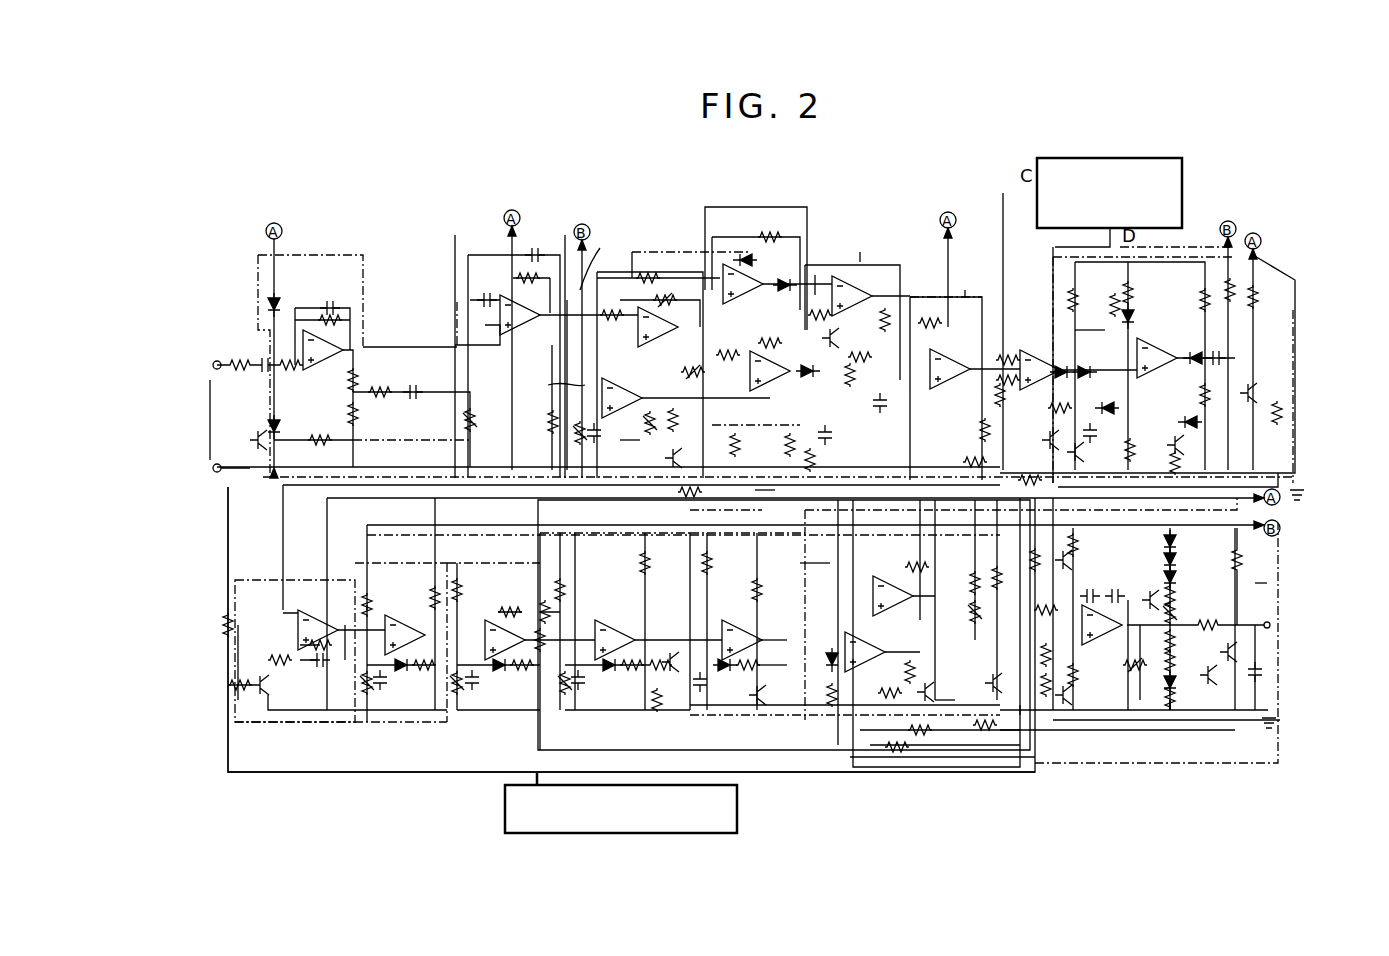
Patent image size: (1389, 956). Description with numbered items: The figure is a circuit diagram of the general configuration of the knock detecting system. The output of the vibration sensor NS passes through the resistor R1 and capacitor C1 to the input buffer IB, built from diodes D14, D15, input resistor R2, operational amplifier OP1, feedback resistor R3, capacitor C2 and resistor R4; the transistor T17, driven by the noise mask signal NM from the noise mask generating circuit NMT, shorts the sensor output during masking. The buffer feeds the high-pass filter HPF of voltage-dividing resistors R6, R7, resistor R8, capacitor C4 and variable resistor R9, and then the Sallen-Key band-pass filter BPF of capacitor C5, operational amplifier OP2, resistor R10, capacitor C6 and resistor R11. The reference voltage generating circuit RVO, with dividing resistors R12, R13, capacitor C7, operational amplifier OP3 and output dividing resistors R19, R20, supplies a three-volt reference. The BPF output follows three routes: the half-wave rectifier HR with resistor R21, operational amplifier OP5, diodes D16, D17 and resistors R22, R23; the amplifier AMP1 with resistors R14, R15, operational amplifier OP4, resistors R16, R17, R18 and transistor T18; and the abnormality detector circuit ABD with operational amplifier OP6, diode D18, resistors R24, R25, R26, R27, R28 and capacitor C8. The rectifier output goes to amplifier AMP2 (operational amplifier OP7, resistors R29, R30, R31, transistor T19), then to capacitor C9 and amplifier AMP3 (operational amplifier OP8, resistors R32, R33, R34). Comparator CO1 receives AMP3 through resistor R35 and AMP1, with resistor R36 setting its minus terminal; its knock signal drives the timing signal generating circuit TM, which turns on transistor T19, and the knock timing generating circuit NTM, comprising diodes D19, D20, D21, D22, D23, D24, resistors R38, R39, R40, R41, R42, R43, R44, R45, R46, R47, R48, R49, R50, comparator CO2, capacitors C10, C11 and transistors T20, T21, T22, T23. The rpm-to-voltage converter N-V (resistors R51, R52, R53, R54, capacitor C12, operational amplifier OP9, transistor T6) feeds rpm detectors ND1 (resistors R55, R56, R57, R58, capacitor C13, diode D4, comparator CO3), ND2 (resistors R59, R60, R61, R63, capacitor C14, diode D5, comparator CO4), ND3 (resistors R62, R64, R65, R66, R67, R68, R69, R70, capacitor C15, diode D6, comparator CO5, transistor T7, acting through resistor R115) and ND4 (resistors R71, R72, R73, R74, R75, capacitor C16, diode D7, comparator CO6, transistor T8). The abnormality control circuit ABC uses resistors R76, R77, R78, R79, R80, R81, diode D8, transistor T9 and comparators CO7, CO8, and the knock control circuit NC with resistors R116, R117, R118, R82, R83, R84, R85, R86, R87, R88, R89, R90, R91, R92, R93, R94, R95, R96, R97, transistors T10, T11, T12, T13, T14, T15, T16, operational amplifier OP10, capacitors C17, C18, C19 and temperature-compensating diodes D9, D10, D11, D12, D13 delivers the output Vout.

The vibration sensor NS is at (222, 420).
The resistor R1 is at (235, 376).
The capacitor C1 is at (248, 353).
The input resistor R2 is at (290, 353).
The diode D15 is at (293, 298).
The diode D14 is at (305, 416).
The transistor T17 is at (280, 449).
The input buffer IB is at (363, 270).
The operational amplifier OP1 is at (324, 363).
The capacitor C2 is at (330, 301).
The feedback resistor R3 is at (336, 330).
The resistor R4 is at (322, 428).
The voltage-dividing resistor R7 is at (365, 376).
The voltage-dividing resistor R6 is at (367, 420).
The high-pass filter HPF is at (411, 381).
The resistor R8 is at (387, 401).
The capacitor C4 is at (415, 381).
The variable resistor R9 is at (453, 423).
The band-pass filter BPF is at (433, 317).
The capacitor C6 is at (547, 246).
The resistor R10 is at (532, 287).
The capacitor C5 is at (484, 309).
The operational amplifier OP2 is at (525, 330).
The amplifier AMP1 is at (615, 258).
The half-wave rectifier HR is at (691, 239).
The resistor R21 is at (671, 267).
The resistor R14 is at (617, 304).
The resistor R15 is at (677, 306).
The operational amplifier OP4 is at (640, 327).
The operational amplifier OP3 is at (627, 384).
The resistor R16 is at (682, 364).
The resistor R18 is at (677, 405).
The voltage-dividing resistor R12 is at (552, 382).
The resistor R11 is at (539, 422).
The voltage-dividing resistor R13 is at (552, 438).
The capacitor C7 is at (560, 448).
The output voltage dividing resistor R20 is at (634, 423).
The reference voltage generating circuit RVO is at (618, 455).
The transistor T18 is at (703, 470).
The output voltage dividing resistor R19 is at (667, 491).
The resistor R115 is at (758, 491).
The resistor R17 is at (739, 447).
The resistor R22 is at (760, 228).
The diode D16 is at (764, 252).
The diode D17 is at (777, 276).
The operational amplifier OP5 is at (742, 294).
The resistor R29 is at (825, 270).
The resistor R23 is at (803, 321).
The amplifier circuit AMP2 is at (870, 250).
The operational amplifier OP7 is at (870, 295).
The resistor R31 is at (911, 303).
The transistor T19 is at (849, 331).
The resistor R30 is at (860, 348).
The operational amplifier OP6 is at (764, 384).
The resistor R24 is at (731, 367).
The resistor R25 is at (782, 351).
The diode D18 is at (812, 381).
The resistor R28 is at (852, 380).
The amplifier AMP3 is at (982, 284).
The resistor R32 is at (932, 312).
The operational amplifier OP8 is at (954, 364).
The capacitor C8 is at (847, 434).
The capacitor C9 is at (888, 417).
The resistor R33 is at (1002, 395).
The resistor R34 is at (964, 430).
The resistor R39 is at (979, 468).
The abnormality detector circuit ABD is at (756, 433).
The resistor R26 is at (780, 448).
The resistor R27 is at (805, 474).
The timing signal generating circuit TM is at (1183, 193).
The knock timing generating circuit NTM is at (1177, 370).
The resistor R35 is at (1020, 337).
The resistor R36 is at (1020, 357).
The resistor R41 is at (1091, 293).
The resistor R43 is at (1101, 308).
The comparator CO1 is at (1096, 333).
The diode D20 is at (1096, 359).
The diode D19 is at (1071, 382).
The resistor R44 is at (1146, 290).
The resistor R45 is at (1184, 298).
The diode D22 is at (1148, 316).
The comparator CO2 is at (1161, 350).
The diode D23 is at (1185, 368).
The capacitor C11 is at (1224, 344).
The resistor R46 is at (1186, 393).
The resistor R40 is at (1046, 409).
The transistor T20 is at (1035, 433).
The transistor T21 is at (1064, 454).
The diode D21 is at (1116, 413).
The capacitor C10 is at (1109, 435).
The resistor R42 is at (1116, 453).
The diode D24 is at (1206, 428).
The transistor T22 is at (1196, 446).
The resistor R47 is at (1196, 463).
The resistor R38 is at (1027, 482).
The transistor T23 is at (1289, 389).
The resistor R50 is at (1305, 413).
The resistor R49 is at (1270, 301).
The resistor R48 is at (1232, 287).
The noise mask signal NM is at (631, 631).
The noise mask generating circuit NMT is at (504, 806).
The rpm-to-voltage converter N-V is at (294, 637).
The operational amplifier OP9 is at (310, 612).
The resistor R51 is at (206, 625).
The resistor R54 is at (285, 632).
The capacitor C12 is at (306, 667).
The resistor R53 is at (236, 664).
The resistor R52 is at (216, 699).
The transistor T6 is at (273, 685).
The rpm detector ND1 is at (401, 550).
The comparator CO3 is at (417, 634).
The resistor R55 is at (387, 599).
The resistor R58 is at (418, 588).
The resistor R56 is at (349, 710).
The capacitor C13 is at (391, 710).
The diode D4 is at (401, 677).
The resistor R57 is at (413, 686).
The rpm detector ND2 is at (493, 550).
The resistor R59 is at (474, 587).
The resistor R62 is at (516, 598).
The comparator CO4 is at (520, 640).
The resistor R65 is at (528, 646).
The diode D5 is at (501, 677).
The resistor R61 is at (519, 686).
The resistor R60 is at (460, 710).
The capacitor C14 is at (493, 710).
The rpm detector ND3 is at (615, 519).
The resistor R68 is at (611, 563).
The resistor R63 is at (581, 586).
The resistor R64 is at (573, 606).
The comparator CO5 is at (625, 624).
The resistor R70 is at (654, 643).
The transistor T7 is at (663, 656).
The diode D6 is at (607, 677).
The resistor R67 is at (623, 684).
The resistor R66 is at (591, 710).
The capacitor C15 is at (564, 710).
The resistor R69 is at (662, 719).
The rpm detector ND4 is at (747, 519).
The abnormality control circuit ABC is at (785, 613).
The resistor R71 is at (727, 563).
The resistor R74 is at (741, 590).
The comparator CO6 is at (739, 628).
The diode D7 is at (734, 677).
The resistor R72 is at (740, 686).
The capacitor C16 is at (704, 702).
The transistor T8 is at (747, 708).
The resistor R73 is at (777, 644).
The resistor R75 is at (777, 667).
The resistor R76 is at (796, 562).
The diode D8 is at (822, 658).
The resistor R77 is at (823, 714).
The comparator CO8 is at (893, 607).
The comparator CO7 is at (881, 652).
The resistor R78 is at (901, 562).
The resistor R79 is at (892, 670).
The resistor R80 is at (884, 685).
The resistor R81 is at (964, 579).
The resistor R82 is at (964, 608).
The resistor R83 is at (974, 564).
The transistor T9 is at (944, 668).
The transistor T10 is at (958, 679).
The transistor T11 is at (997, 669).
The resistor R117 is at (983, 737).
The resistor R118 is at (888, 768).
The resistor R116 is at (936, 760).
The resistor R86 is at (1035, 552).
The resistor R88 is at (1094, 543).
The transistor T12 is at (1087, 558).
The capacitor C17 is at (1068, 590).
The capacitor C18 is at (1131, 589).
The transistor T14 is at (1151, 605).
The operational amplifier OP10 is at (1114, 629).
The resistor R87 is at (1042, 620).
The resistor R84 is at (1042, 655).
The resistor R85 is at (1042, 681).
The resistor R90 is at (1116, 664).
The resistor R89 is at (1094, 678).
The transistor T13 is at (1087, 696).
The diode D9 is at (1187, 541).
The diode D10 is at (1193, 559).
The diode D11 is at (1193, 577).
The resistor R91 is at (1192, 595).
The resistor R92 is at (1190, 611).
The resistor R93 is at (1190, 640).
The resistor R94 is at (1190, 659).
The transistor T15 is at (1226, 672).
The resistor R95 is at (1191, 695).
The diode D12 is at (1165, 690).
The diode D13 is at (1170, 705).
The resistor R96 is at (1229, 611).
The resistor R97 is at (1265, 560).
The knock control circuit NC is at (1274, 590).
The output terminal Vout is at (1287, 622).
The transistor T16 is at (1268, 648).
The capacitor C19 is at (1282, 671).